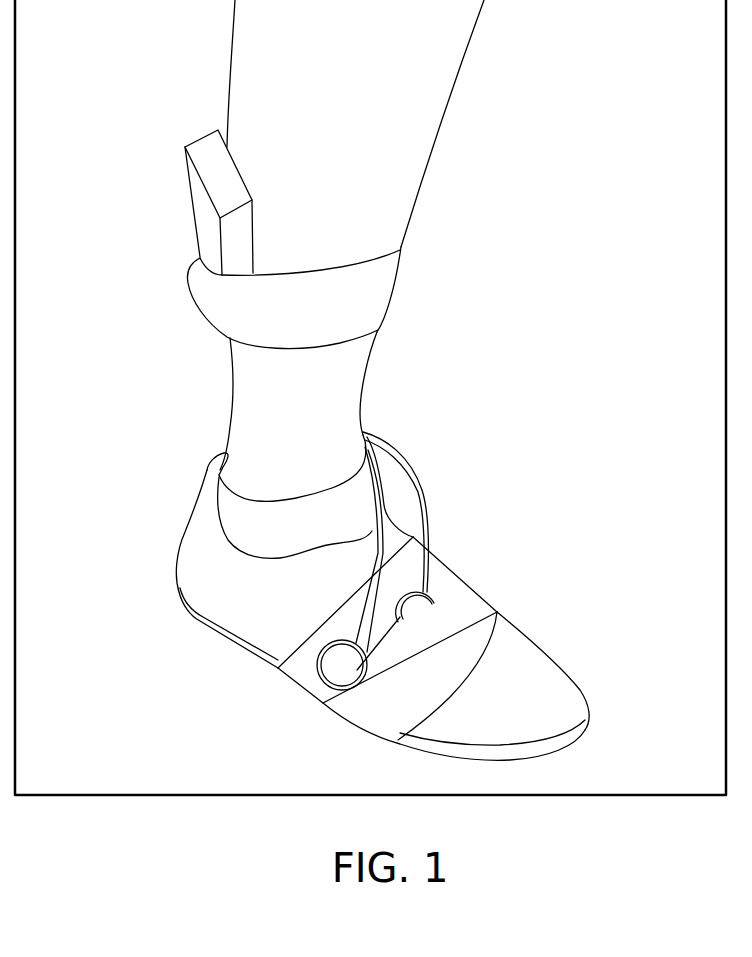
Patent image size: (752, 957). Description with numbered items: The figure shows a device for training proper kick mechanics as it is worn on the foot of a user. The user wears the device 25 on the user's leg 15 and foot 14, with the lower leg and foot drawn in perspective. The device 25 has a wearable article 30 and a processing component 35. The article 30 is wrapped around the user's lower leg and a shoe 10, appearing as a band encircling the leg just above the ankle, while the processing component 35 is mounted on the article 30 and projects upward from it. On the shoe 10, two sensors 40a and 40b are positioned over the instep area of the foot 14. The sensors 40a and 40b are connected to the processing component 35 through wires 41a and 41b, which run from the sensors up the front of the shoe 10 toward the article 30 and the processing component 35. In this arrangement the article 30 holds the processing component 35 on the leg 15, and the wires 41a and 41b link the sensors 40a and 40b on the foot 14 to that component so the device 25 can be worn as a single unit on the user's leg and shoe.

The shoe 10 is at (368, 596).
The foot 14 is at (542, 651).
The leg 15 is at (455, 141).
The device 25 is at (274, 218).
The wearable article 30 is at (395, 274).
The processing component 35 is at (208, 140).
The sensor 40a is at (413, 606).
The sensor 40b is at (334, 670).
The wire 41a is at (428, 492).
The wire 41b is at (373, 556).